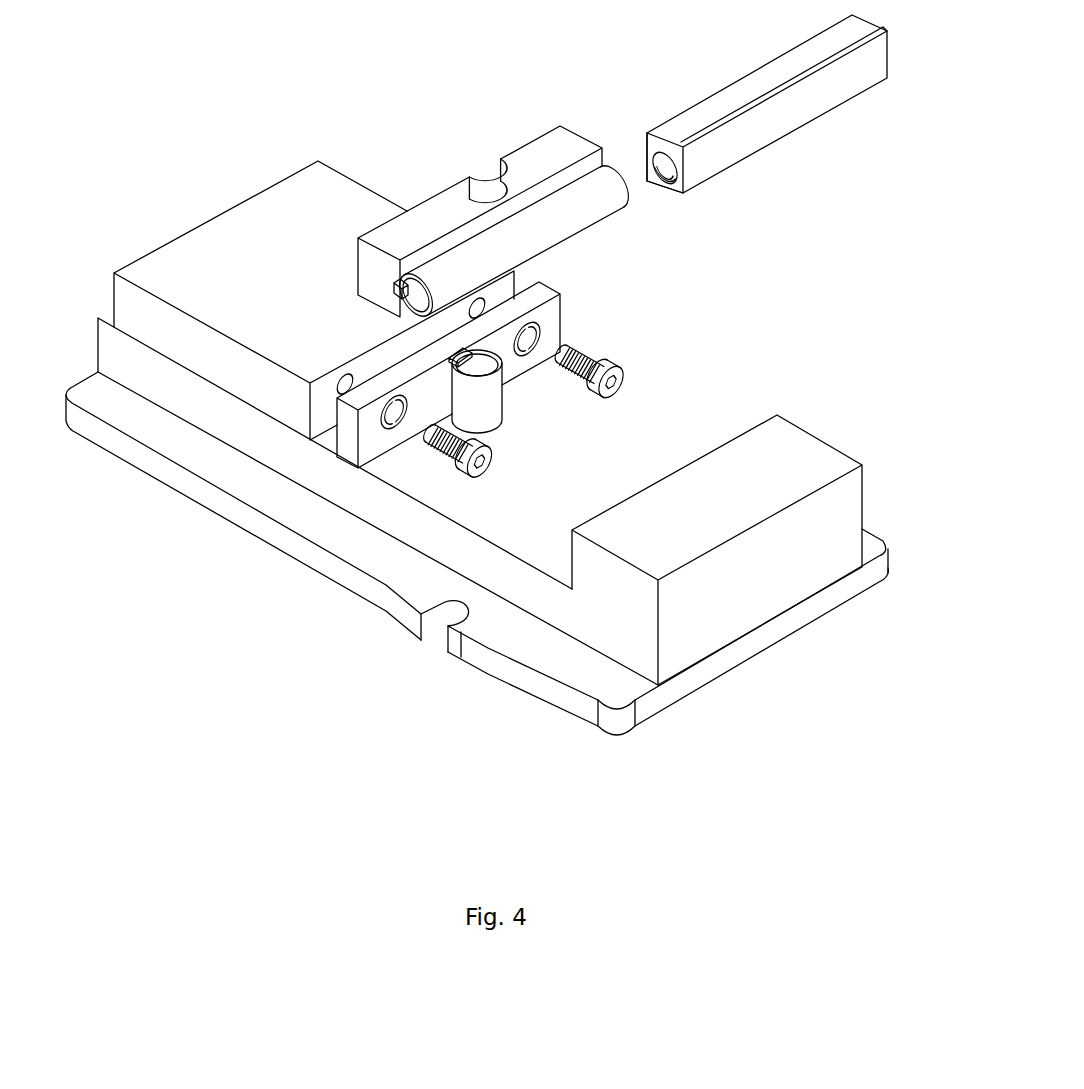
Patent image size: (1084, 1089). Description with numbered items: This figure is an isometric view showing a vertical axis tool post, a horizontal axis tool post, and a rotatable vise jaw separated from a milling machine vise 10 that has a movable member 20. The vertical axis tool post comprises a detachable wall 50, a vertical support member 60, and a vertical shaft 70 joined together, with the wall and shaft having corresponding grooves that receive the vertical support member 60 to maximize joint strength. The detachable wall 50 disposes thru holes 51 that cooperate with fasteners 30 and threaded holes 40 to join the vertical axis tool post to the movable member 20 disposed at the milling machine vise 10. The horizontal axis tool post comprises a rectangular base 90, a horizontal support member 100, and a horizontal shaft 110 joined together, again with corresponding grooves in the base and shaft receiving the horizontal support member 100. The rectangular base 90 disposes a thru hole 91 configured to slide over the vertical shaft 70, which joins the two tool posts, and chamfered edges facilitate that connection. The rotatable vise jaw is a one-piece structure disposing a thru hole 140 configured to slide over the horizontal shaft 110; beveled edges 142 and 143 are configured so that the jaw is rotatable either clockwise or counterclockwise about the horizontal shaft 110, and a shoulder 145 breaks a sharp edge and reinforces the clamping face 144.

The milling machine vise 10 is at (757, 602).
The movable member 20 is at (127, 298).
The fasteners 30 is at (618, 370).
The threaded holes 40 is at (507, 290).
The detachable wall 50 is at (531, 294).
The thru holes 51 is at (535, 330).
The vertical support member 60 is at (458, 352).
The vertical shaft 70 is at (483, 394).
The rectangular base 90 is at (548, 145).
The thru hole 91 is at (482, 188).
The horizontal support member 100 is at (400, 285).
The horizontal shaft 110 is at (610, 197).
The thru hole 140 is at (663, 163).
The beveled edge 142 is at (647, 133).
The beveled edge 143 is at (652, 173).
The clamping face 144 is at (883, 70).
The shoulder 145 is at (880, 32).